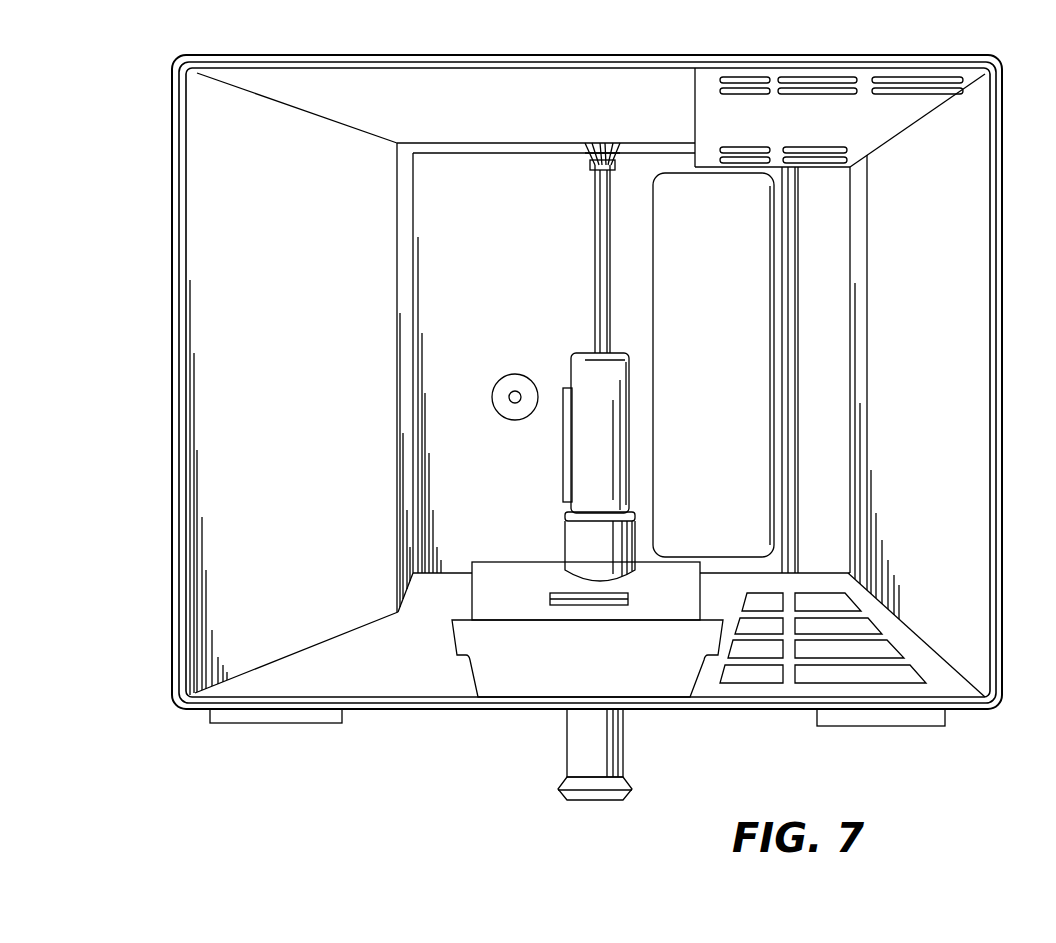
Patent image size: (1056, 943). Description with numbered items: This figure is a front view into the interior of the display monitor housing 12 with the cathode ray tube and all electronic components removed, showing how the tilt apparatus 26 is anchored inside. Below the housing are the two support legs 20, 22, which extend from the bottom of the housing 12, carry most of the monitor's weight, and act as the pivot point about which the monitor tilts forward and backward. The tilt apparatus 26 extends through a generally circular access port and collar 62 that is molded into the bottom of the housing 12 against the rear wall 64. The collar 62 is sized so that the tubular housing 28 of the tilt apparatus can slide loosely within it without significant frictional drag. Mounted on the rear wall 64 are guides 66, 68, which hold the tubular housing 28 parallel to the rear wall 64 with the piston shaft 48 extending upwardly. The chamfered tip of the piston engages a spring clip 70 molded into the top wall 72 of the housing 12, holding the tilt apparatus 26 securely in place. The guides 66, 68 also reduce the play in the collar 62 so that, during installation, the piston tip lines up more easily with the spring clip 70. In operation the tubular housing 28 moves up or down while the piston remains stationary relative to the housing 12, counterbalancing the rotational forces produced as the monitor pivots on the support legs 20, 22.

The monitor housing 12 is at (168, 136).
The support leg 20 is at (309, 722).
The support leg 22 is at (920, 727).
The tilt apparatus 26 is at (560, 736).
The tubular housing 28 is at (571, 376).
The piston shaft 48 is at (598, 255).
The access port and collar 62 is at (572, 536).
The rear wall 64 is at (448, 247).
The guide 66 is at (563, 431).
The guide 68 is at (640, 333).
The spring clip 70 is at (590, 177).
The top wall 72 is at (412, 82).